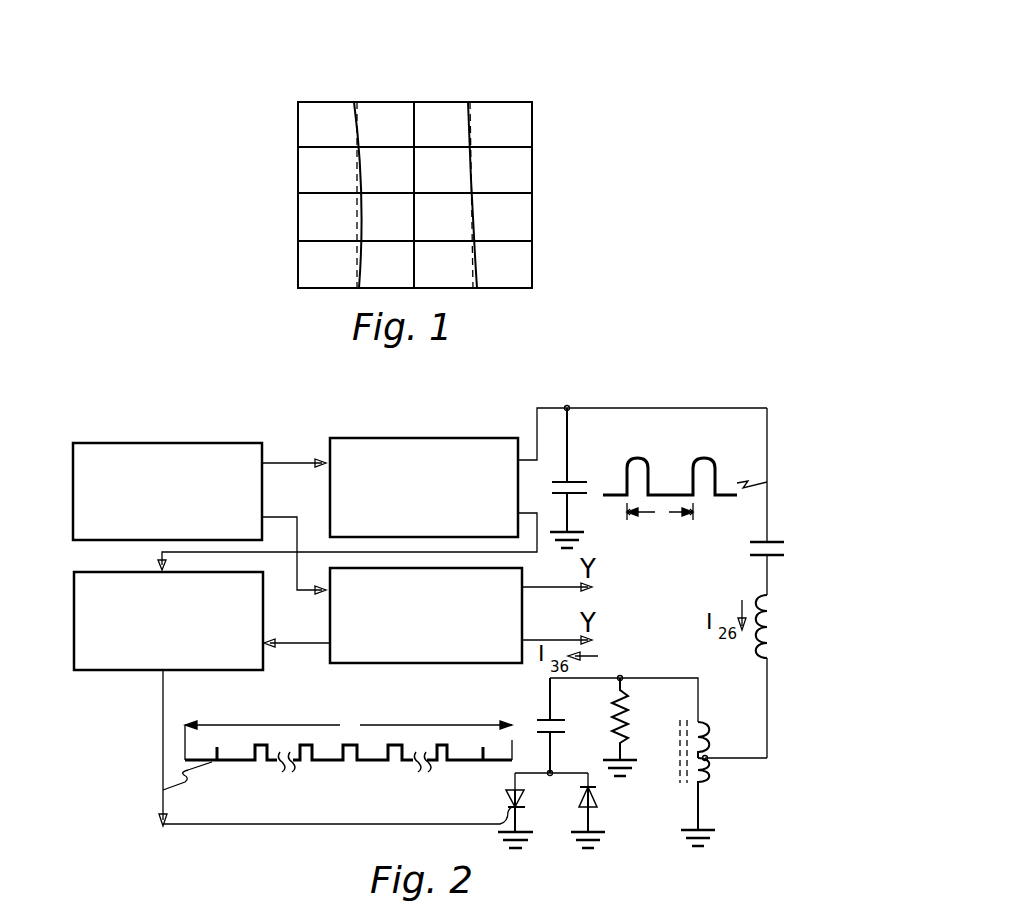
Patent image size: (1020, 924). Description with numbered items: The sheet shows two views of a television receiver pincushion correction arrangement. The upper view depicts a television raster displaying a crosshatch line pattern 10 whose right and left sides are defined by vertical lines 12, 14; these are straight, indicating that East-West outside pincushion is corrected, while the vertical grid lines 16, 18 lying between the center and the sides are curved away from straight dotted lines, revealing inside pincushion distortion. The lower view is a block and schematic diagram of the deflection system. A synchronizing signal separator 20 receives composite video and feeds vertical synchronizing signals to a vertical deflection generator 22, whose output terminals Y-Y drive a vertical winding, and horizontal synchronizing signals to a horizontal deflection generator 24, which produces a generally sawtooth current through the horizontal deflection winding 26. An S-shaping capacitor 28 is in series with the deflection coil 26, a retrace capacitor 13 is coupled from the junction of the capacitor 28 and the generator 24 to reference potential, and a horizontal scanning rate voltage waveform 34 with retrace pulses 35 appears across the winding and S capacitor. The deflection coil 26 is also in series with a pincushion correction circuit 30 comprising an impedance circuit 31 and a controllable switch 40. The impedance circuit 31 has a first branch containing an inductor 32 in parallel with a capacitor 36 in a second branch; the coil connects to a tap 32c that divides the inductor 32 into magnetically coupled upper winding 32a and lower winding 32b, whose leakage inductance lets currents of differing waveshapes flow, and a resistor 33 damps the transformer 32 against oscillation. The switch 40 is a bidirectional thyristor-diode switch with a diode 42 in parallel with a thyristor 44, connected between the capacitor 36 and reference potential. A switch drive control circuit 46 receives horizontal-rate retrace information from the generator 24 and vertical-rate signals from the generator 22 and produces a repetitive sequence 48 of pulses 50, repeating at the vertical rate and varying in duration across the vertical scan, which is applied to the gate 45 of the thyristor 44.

In FIG. 1, the crosshatch line pattern 10 is at (275, 130).
In FIG. 1, the vertical line 12 is at (532, 224).
In FIG. 1, the vertical line 14 is at (298, 224).
In FIG. 1, the vertical grid line 16 is at (467, 125).
In FIG. 1, the vertical grid line 18 is at (362, 132).
In FIG. 2, the retrace capacitor 13 is at (576, 480).
In FIG. 2, the synchronizing signal separator 20 is at (98, 443).
In FIG. 2, the vertical deflection generator 22 is at (372, 663).
In FIG. 2, the horizontal deflection generator 24 is at (360, 438).
In FIG. 2, the horizontal deflection winding 26 is at (762, 605).
In FIG. 2, the capacitor 28 is at (750, 547).
In FIG. 2, the pincushion correction circuit 30 is at (635, 667).
In FIG. 2, the impedance circuit 31 is at (600, 717).
In FIG. 2, the inductor 32 is at (723, 749).
In FIG. 2, the upper winding 32a is at (703, 728).
In FIG. 2, the lower winding 32b is at (704, 776).
In FIG. 2, the tap 32c is at (708, 758).
In FIG. 2, the resistor 33 is at (630, 730).
In FIG. 2, the horizontal scanning rate voltage waveform 34 is at (678, 473).
In FIG. 2, the retrace pulses 35 is at (718, 488).
In FIG. 2, the capacitor 36 is at (540, 722).
In FIG. 2, the controllable switch 40 is at (565, 812).
In FIG. 2, the diode 42 is at (596, 797).
In FIG. 2, the thyristor 44 is at (512, 790).
In FIG. 2, the gate 45 is at (508, 810).
In FIG. 2, the switch drive control circuit 46 is at (114, 670).
In FIG. 2, the repetitive sequence 48 is at (334, 764).
In FIG. 2, the pulses 50 is at (357, 750).